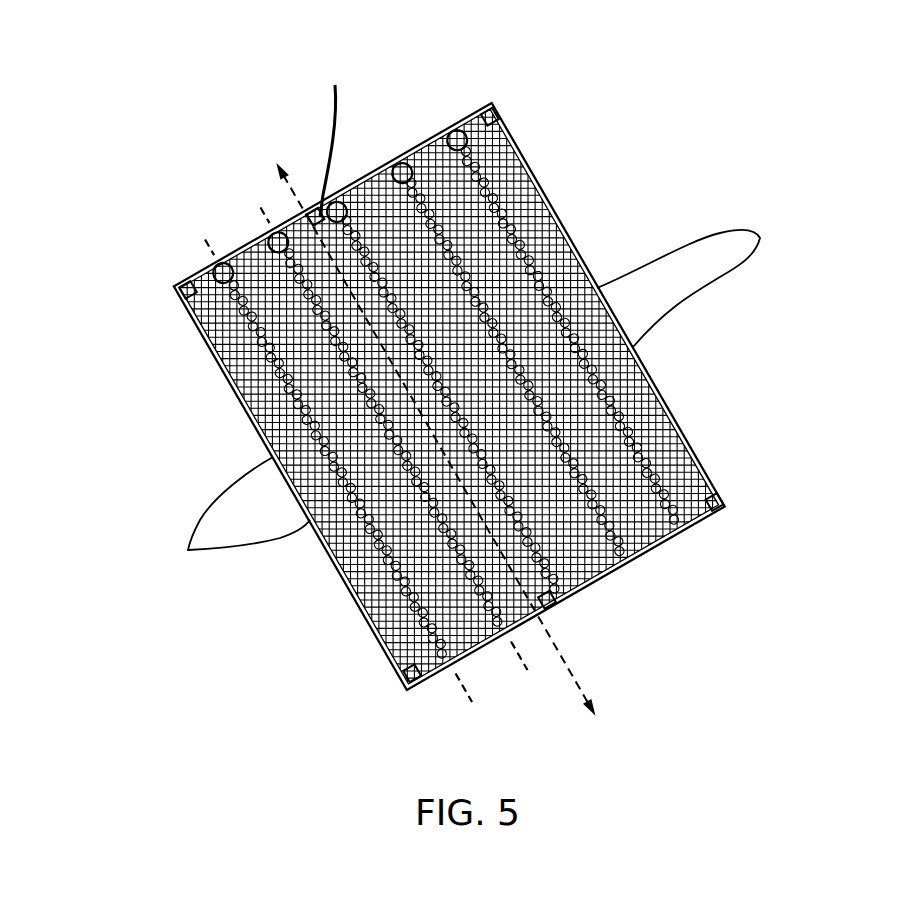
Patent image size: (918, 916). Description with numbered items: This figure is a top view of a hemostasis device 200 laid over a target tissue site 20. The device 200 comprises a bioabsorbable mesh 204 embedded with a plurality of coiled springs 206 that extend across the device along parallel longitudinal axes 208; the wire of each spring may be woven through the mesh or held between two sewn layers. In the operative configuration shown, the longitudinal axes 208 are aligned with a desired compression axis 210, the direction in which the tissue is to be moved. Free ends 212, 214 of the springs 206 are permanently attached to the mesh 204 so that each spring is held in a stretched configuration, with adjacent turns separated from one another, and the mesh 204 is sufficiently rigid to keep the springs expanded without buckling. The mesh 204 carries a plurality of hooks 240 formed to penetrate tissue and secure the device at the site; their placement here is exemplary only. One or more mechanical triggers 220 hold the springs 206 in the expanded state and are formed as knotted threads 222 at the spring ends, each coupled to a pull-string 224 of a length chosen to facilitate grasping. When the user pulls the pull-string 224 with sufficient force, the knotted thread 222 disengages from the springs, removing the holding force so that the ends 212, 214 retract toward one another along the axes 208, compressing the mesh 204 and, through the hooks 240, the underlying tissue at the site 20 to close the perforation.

The hemostasis device 200 is at (124, 86).
The target tissue site 20 is at (612, 280).
The bioabsorbable mesh 204 is at (223, 330).
The springs 206 is at (258, 380).
The longitudinal axes 208 is at (261, 210).
The compression axis 210 is at (416, 422).
The free end of spring 212 is at (213, 265).
The free end of spring 214 is at (448, 673).
The mechanical trigger 220 is at (311, 122).
The knotted thread 222 is at (447, 128).
The pull-string 224 is at (338, 95).
The hooks 240 is at (494, 105).